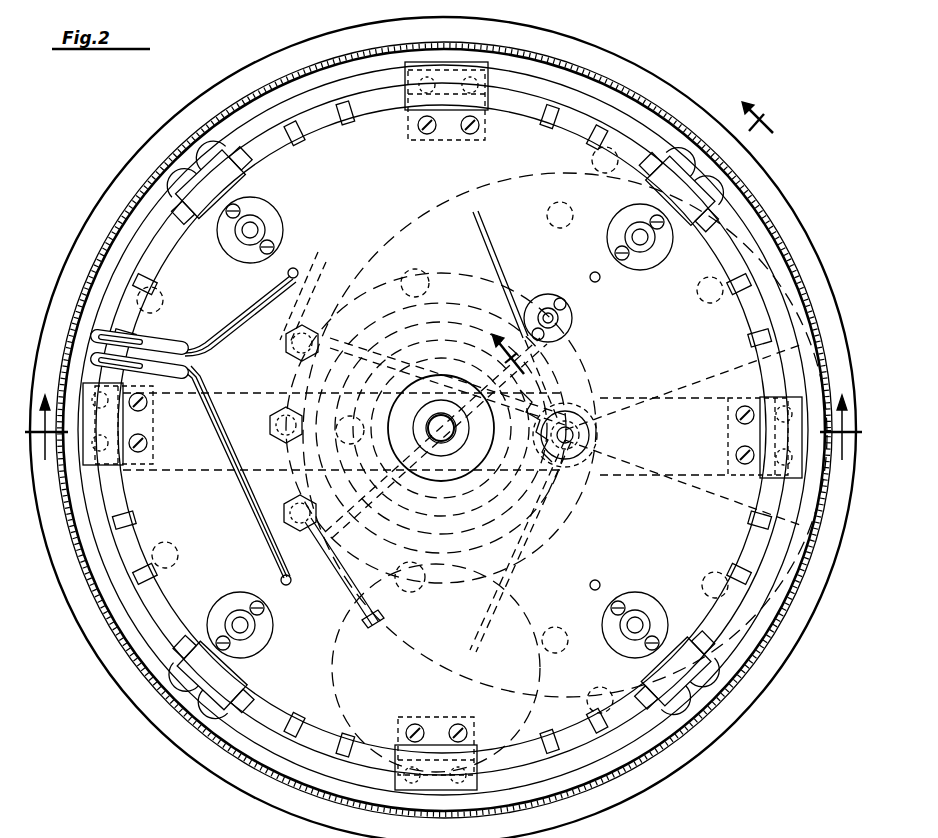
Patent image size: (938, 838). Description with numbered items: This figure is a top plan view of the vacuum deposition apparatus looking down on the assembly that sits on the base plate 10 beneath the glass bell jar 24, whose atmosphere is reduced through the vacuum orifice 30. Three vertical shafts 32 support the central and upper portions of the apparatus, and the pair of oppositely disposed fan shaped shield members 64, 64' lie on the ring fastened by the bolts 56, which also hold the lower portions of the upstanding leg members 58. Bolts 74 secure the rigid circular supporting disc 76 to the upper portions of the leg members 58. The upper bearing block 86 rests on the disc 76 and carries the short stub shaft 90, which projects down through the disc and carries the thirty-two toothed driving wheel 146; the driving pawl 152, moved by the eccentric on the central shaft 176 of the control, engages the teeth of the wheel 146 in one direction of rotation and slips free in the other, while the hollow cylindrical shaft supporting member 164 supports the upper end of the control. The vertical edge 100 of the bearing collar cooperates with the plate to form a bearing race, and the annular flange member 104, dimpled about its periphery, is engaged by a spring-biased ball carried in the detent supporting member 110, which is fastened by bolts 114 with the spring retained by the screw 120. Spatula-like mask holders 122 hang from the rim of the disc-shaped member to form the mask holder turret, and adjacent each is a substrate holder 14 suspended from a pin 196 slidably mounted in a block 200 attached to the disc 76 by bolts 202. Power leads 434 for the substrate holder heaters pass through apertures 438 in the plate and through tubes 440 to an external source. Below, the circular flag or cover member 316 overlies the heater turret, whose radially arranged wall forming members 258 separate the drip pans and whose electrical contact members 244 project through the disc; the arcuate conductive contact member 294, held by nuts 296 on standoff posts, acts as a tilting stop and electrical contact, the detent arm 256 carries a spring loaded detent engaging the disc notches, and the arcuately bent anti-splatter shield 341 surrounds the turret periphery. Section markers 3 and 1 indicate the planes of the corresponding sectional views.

The base plate 10 is at (752, 690).
The glass bell jar 24 is at (90, 642).
The fan shaped shield member 64 is at (452, 430).
The fan shaped shield member 64' is at (799, 630).
The circular supporting disc 76 is at (350, 181).
The vertically disposed rods or shafts 32 is at (600, 182).
The substrate mask holder 122 is at (592, 150).
The leg member 58 is at (408, 100).
The bolts 56 is at (768, 476).
The bolts 74 is at (462, 135).
The substrate holder 14 is at (222, 182).
The stud or pin 196 is at (260, 233).
The bolts 202 is at (245, 600).
The block 200 is at (232, 244).
The apertures 438 is at (288, 276).
The anti-splatter baffle or shield 341 is at (315, 268).
The power leads 434 is at (220, 354).
The tubes 440 is at (168, 345).
The arcuate conductive contact member 294 is at (240, 484).
The nuts 296 is at (262, 396).
The upper bearing block 86 is at (430, 446).
The stub shaft 90 is at (440, 420).
The vertical edge 100 is at (412, 520).
The circular flag or cover member 316 is at (410, 235).
The electrical contact member 244 is at (430, 270).
The vacuum orifice 30 is at (372, 640).
The detent arm 256 is at (366, 628).
The driving pawl 152 is at (578, 405).
The hollow cylindrical shaft supporting member 164 is at (585, 460).
The wall forming members 258 is at (600, 436).
The central shaft 176 is at (625, 405).
The driving wheel 146 is at (525, 512).
The annular flange member 104 is at (530, 548).
The bolts 114 is at (538, 302).
The detent supporting member 110 is at (558, 310).
The screw 120 is at (570, 330).
The section line 3- 3 is at (624, 230).
The section line 1- 1 is at (443, 418).